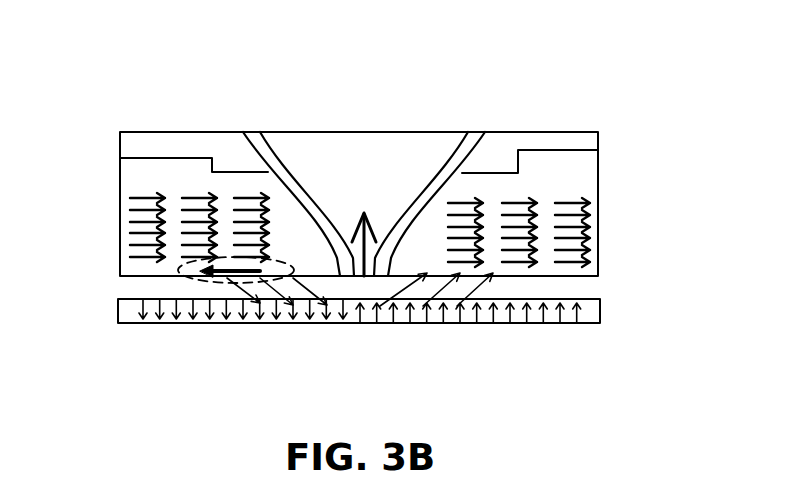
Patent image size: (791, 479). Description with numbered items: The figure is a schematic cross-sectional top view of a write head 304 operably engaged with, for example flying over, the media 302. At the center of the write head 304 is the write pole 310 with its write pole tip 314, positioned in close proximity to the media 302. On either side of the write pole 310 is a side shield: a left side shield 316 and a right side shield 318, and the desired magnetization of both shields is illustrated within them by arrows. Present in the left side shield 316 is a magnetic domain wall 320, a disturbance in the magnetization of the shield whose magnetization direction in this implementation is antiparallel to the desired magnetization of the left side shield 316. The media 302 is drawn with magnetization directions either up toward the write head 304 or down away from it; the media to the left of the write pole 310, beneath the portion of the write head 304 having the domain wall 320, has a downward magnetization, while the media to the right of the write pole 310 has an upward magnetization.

The media 302 is at (600, 310).
The write head 304 is at (630, 133).
The write pole 310 is at (377, 176).
The write pole tip 314 is at (366, 277).
The left side shield 316 is at (118, 223).
The right side shield 318 is at (600, 203).
The magnetic domain wall 320 is at (200, 276).